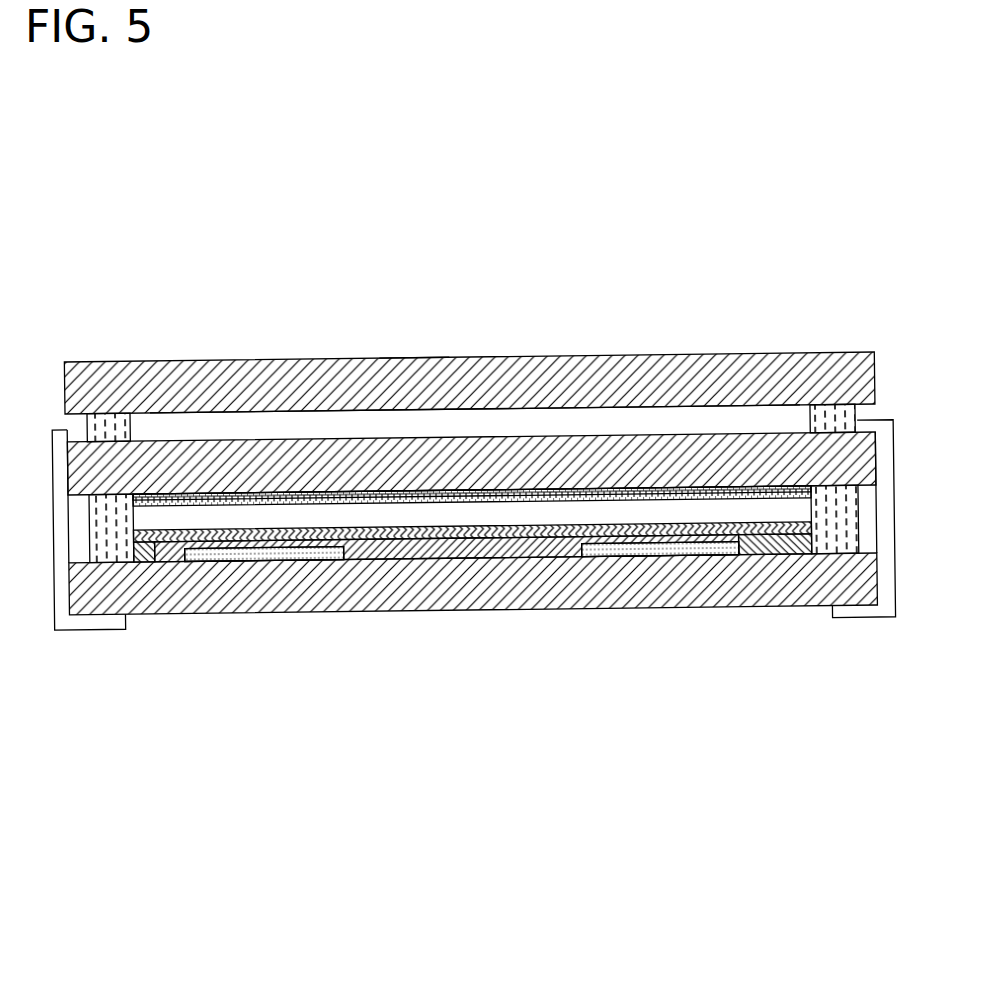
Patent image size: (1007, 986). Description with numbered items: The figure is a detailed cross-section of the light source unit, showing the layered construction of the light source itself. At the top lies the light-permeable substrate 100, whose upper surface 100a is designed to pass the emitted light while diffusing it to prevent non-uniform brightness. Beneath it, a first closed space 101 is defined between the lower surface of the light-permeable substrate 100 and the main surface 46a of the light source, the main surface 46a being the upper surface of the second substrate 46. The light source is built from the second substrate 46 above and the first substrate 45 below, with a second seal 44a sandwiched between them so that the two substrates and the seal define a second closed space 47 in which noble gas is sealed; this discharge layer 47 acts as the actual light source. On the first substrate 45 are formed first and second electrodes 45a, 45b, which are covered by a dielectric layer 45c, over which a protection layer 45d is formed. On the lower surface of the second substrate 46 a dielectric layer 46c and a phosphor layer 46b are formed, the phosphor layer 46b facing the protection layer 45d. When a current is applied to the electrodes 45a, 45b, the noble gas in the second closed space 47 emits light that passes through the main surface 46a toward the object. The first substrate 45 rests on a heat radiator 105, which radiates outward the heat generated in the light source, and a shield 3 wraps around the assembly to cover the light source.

The shield 3 is at (893, 587).
The second seal 44a is at (90, 530).
The first substrate 45 is at (430, 598).
The first electrode 45a is at (277, 553).
The second electrode 45b is at (632, 548).
The dielectric layer 45c is at (772, 543).
The protection layer 45d is at (157, 542).
The second substrate 46 is at (878, 450).
The main surface 46a is at (513, 435).
The phosphor layer 46b is at (663, 488).
The dielectric layer 46c is at (165, 495).
The second closed space 47 is at (514, 520).
The light-permeable substrate 100 is at (352, 360).
The upper surface 100a is at (413, 355).
The first closed space 101 is at (280, 425).
The heat radiator 105 is at (277, 613).